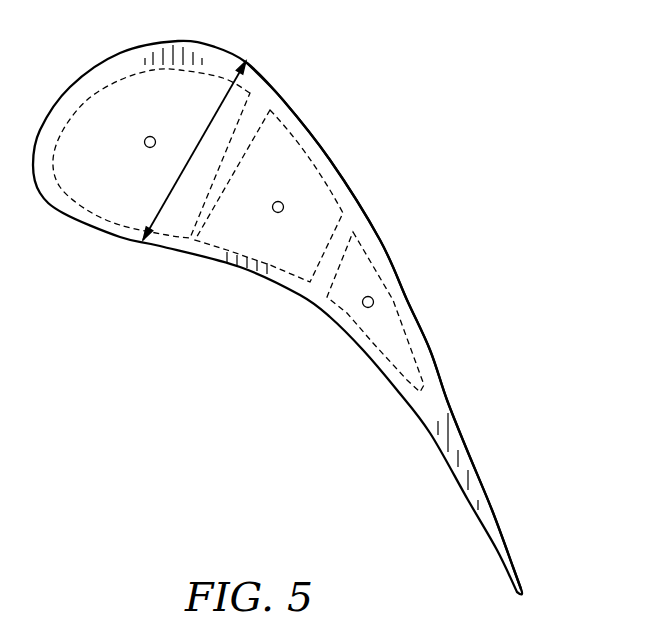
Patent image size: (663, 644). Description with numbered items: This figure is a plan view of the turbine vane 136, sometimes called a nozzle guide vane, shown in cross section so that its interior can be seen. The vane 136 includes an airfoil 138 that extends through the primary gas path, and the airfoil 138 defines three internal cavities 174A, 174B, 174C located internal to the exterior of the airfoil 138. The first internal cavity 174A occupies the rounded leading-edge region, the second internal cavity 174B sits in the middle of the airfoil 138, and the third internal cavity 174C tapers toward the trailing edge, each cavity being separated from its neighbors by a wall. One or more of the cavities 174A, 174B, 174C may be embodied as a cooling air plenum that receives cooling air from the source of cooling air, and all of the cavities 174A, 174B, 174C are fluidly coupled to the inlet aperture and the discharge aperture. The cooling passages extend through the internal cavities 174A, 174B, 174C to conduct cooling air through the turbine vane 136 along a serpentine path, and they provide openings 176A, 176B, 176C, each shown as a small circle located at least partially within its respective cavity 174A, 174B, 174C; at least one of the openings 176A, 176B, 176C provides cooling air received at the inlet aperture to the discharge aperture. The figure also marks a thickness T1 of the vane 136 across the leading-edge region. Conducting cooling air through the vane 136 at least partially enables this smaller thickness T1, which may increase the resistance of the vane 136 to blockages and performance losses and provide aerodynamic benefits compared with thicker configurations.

The turbine vane 136 is at (500, 130).
The airfoil 138 is at (380, 197).
The internal cavity 174A is at (217, 113).
The internal cavity 174B is at (295, 190).
The internal cavity 174C is at (378, 330).
The opening 176A is at (144, 146).
The opening 176B is at (272, 210).
The opening 176C is at (362, 304).
The thickness T1 is at (193, 152).